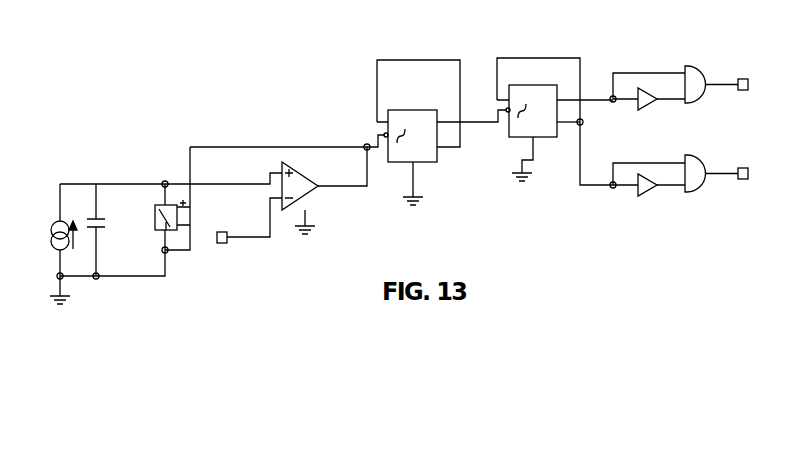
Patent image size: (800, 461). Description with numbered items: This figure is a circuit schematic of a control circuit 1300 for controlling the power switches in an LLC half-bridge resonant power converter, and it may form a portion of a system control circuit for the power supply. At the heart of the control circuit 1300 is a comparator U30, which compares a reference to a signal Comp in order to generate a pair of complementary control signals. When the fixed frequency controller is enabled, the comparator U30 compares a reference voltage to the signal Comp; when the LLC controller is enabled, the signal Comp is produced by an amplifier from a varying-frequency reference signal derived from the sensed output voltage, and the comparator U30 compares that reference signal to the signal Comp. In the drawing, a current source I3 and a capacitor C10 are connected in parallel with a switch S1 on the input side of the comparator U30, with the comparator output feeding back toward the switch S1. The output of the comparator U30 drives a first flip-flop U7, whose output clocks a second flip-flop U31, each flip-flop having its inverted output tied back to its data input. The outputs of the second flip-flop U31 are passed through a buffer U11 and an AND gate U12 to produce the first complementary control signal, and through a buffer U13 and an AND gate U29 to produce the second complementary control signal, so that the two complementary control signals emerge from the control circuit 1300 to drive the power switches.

The control circuit 1300 is at (646, 41).
The current source I3 is at (55, 231).
The capacitor C10 is at (114, 230).
The switch S1 is at (161, 217).
The signal (comp) Comp is at (228, 226).
The comparator U30 is at (317, 187).
The D flip-flop U7 is at (412, 126).
The D flip-flop U31 is at (533, 100).
The buffer U11 is at (646, 111).
The AND gate U12 is at (710, 74).
The buffer U13 is at (645, 196).
The AND gate U29 is at (710, 163).